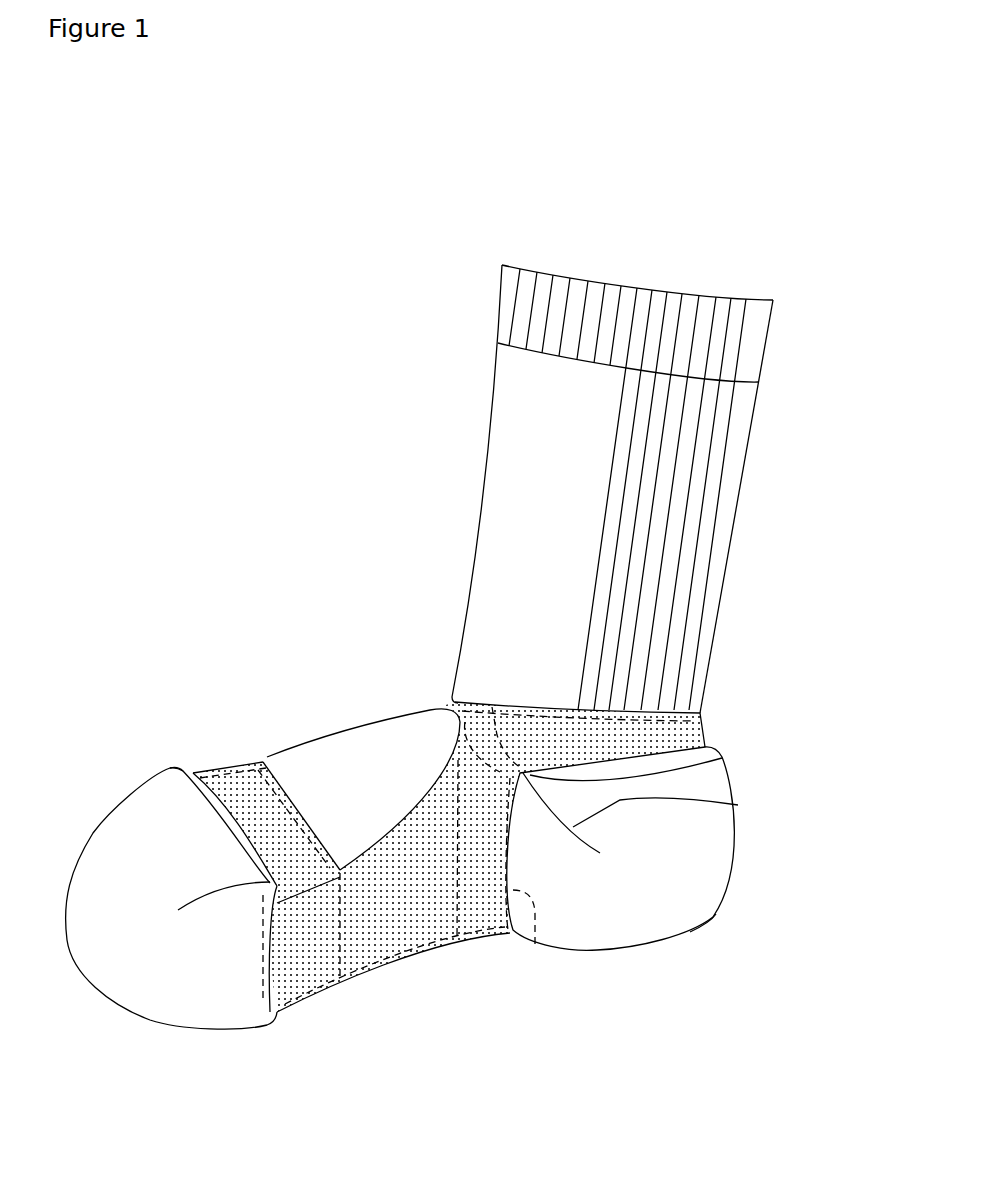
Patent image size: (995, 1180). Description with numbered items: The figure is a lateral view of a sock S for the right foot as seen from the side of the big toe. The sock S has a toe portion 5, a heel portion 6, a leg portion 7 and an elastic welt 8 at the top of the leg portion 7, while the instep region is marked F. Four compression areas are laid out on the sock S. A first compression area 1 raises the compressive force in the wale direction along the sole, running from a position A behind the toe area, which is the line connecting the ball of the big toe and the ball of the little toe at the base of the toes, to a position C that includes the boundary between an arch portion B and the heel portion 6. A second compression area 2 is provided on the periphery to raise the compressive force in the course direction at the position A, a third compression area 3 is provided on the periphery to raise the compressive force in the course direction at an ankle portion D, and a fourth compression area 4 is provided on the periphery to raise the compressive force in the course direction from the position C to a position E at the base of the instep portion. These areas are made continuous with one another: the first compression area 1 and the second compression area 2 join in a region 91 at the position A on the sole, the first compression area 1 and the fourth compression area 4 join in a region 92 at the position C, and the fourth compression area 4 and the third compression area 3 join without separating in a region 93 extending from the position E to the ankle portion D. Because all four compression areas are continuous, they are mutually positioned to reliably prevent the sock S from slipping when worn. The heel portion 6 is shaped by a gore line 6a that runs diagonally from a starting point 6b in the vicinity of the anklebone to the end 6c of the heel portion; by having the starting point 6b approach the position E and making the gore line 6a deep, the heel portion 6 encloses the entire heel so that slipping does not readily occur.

The sock S is at (742, 270).
The first compression area 1 is at (415, 957).
The second compression area 2 is at (313, 997).
The third compression area 3 is at (660, 713).
The fourth compression area 4 is at (433, 795).
The toe portion 5 is at (95, 872).
The heel portion 6 is at (665, 927).
The gore line 6a is at (738, 805).
The starting point of the gore line 6b is at (722, 758).
The end of the heel portion 6c is at (713, 920).
The leg portion 7 is at (498, 445).
The elastic welt 8 is at (528, 278).
The region where first and second compression areas are continuous 91 is at (263, 990).
The region where first and fourth compression areas are continuous 92 is at (517, 947).
The region where fourth and third compression areas are continuous 93 is at (492, 707).
The instep region F is at (326, 804).
The position behind the toe area A is at (285, 1018).
The arch portion B is at (382, 973).
The position including the boundary between the arch portion and the heel portion C is at (497, 943).
The ankle portion D is at (710, 726).
The position at the base of the instep portion E is at (443, 702).